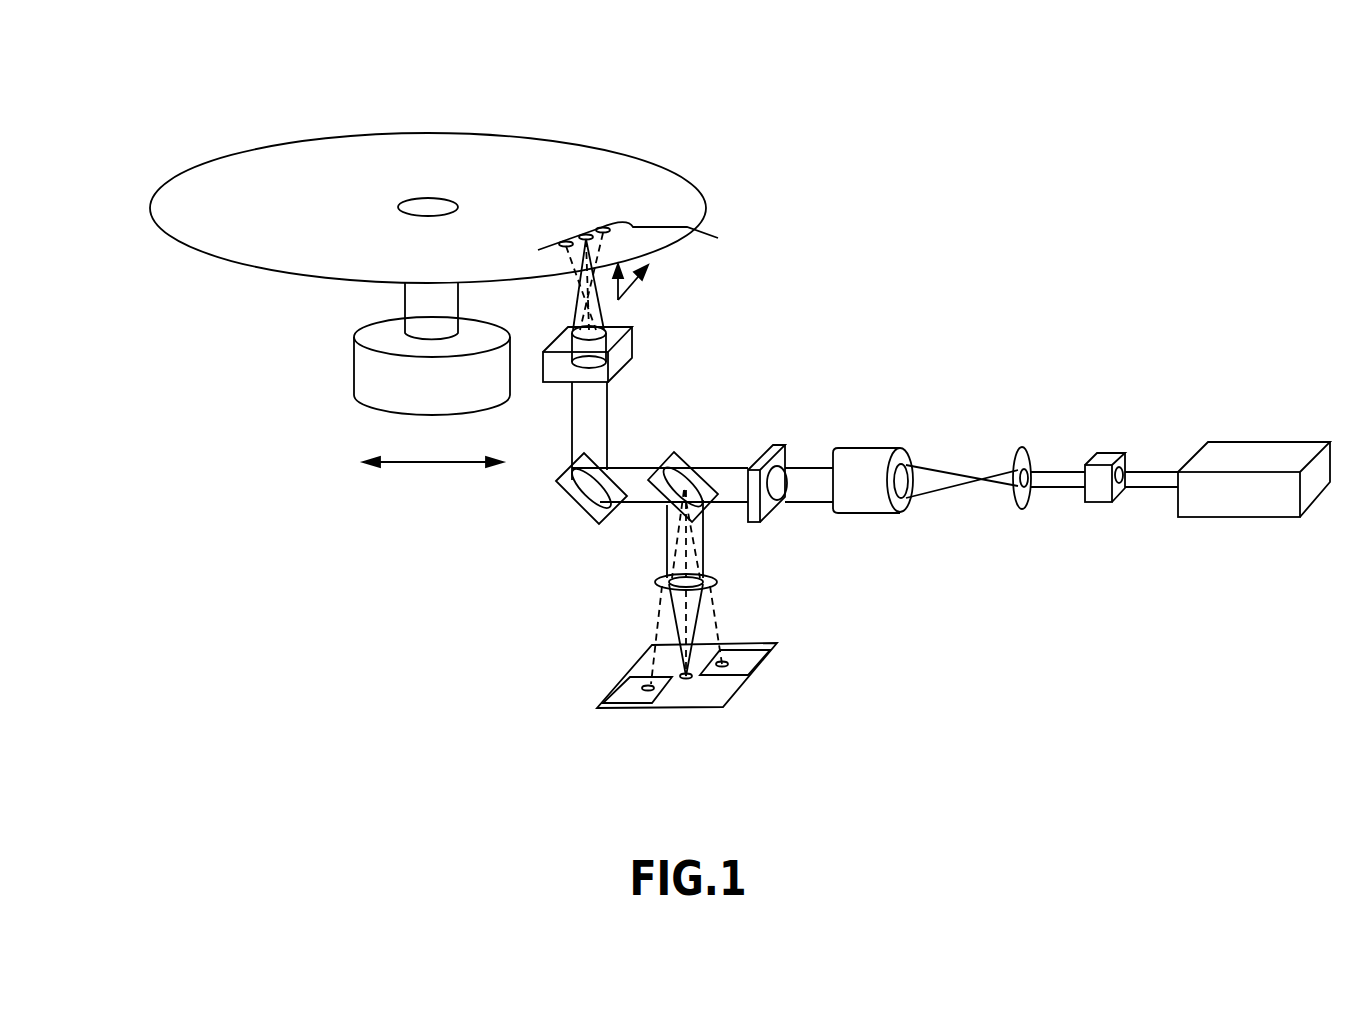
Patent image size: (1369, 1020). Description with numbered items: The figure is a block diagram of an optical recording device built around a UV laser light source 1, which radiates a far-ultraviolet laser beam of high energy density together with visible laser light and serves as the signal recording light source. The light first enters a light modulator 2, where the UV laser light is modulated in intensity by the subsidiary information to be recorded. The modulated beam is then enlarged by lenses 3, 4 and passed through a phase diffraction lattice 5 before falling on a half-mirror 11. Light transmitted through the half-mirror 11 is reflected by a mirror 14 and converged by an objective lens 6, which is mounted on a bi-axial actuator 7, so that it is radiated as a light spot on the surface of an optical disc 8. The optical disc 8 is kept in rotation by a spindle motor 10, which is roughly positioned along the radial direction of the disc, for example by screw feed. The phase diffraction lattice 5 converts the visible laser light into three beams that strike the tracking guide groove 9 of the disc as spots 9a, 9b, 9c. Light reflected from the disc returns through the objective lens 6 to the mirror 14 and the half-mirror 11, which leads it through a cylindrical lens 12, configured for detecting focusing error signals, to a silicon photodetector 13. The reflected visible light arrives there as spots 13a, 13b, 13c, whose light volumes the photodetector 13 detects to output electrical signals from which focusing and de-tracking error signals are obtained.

The UV laser light source 1 is at (1260, 440).
The light modulator 2 is at (1110, 458).
The lens 3 is at (1022, 448).
The lens 4 is at (868, 448).
The phase diffraction lattice 5 is at (762, 448).
The objective lens 6 is at (570, 333).
The bi-axial actuator 7 is at (623, 350).
The optical disc 8 is at (437, 140).
The guide groove for tracking 9 is at (638, 240).
The spot 9a is at (564, 241).
The spot 9b is at (586, 234).
The spot 9c is at (606, 228).
The spindle motor 10 is at (353, 375).
The half-mirror 11 is at (683, 453).
The cylindrical lens 12 is at (717, 582).
The photodetector 13 is at (763, 643).
The spot 13a is at (725, 668).
The spot 13b is at (686, 680).
The spot 13c is at (648, 692).
The mirror 14 is at (572, 500).